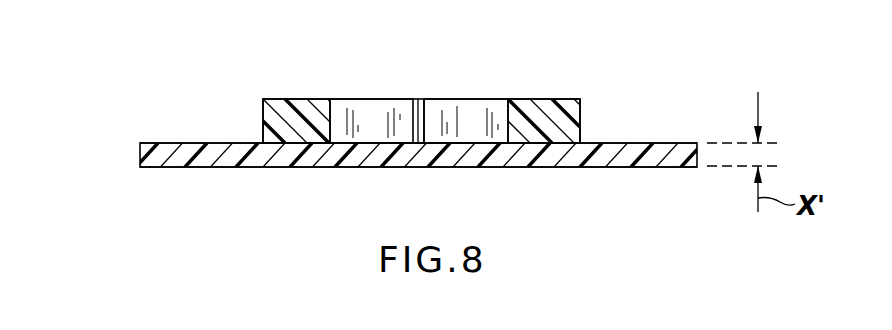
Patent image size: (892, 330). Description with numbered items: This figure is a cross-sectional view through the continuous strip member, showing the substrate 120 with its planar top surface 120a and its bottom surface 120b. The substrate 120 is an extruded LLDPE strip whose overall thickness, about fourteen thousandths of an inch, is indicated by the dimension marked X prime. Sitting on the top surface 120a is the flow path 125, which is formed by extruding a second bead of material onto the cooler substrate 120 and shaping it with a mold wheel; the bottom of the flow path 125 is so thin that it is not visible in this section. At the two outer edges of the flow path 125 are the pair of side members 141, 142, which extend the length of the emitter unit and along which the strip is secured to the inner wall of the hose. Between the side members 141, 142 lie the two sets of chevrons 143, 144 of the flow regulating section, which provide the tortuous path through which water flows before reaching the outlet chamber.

The substrate 120 is at (328, 167).
The top surface 120a is at (180, 143).
The bottom surface 120b is at (178, 167).
The flow path 125 is at (580, 118).
The side member 141 is at (287, 108).
The side member 142 is at (548, 107).
The chevrons 143 is at (377, 107).
The chevrons 144 is at (463, 105).